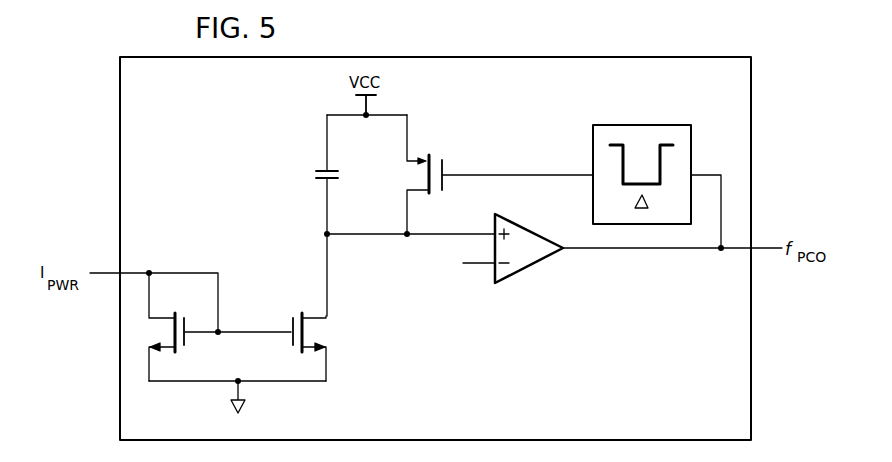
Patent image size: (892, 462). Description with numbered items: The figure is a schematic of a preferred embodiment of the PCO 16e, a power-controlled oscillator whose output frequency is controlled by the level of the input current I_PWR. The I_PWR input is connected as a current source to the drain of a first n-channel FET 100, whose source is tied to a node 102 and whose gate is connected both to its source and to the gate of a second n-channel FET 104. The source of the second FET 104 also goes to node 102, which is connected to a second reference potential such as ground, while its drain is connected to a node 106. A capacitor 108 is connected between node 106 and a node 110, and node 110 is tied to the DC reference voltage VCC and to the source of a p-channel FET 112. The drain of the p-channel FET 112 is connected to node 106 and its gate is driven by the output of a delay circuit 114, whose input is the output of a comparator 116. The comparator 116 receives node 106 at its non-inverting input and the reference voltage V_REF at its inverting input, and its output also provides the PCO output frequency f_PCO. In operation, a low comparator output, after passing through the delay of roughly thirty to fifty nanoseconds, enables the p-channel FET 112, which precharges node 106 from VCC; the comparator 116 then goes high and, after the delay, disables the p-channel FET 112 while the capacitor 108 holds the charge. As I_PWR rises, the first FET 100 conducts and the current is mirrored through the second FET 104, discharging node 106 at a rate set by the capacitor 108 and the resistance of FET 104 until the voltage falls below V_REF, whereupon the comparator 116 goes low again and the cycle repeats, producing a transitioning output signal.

The PCO 16e is at (533, 58).
The first n-channel field effect transistor 100 is at (185, 340).
The node 102 is at (193, 384).
The second n-channel FET 104 is at (293, 322).
The node 106 is at (327, 288).
The capacitor 108 is at (316, 173).
The node 110 is at (327, 140).
The p-channel FET 112 is at (442, 166).
The delay circuit 114 is at (641, 125).
The comparator 116 is at (530, 268).